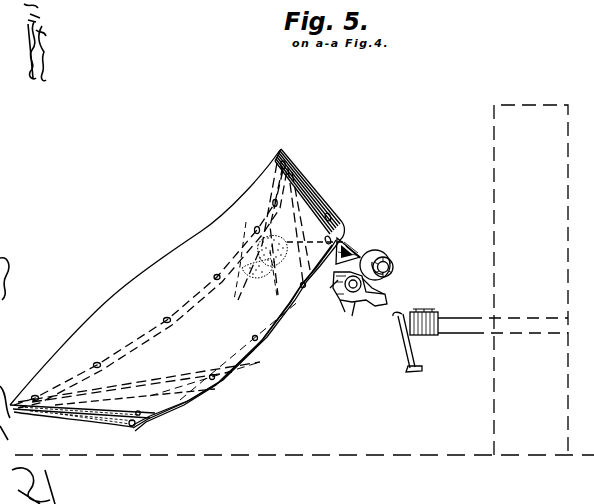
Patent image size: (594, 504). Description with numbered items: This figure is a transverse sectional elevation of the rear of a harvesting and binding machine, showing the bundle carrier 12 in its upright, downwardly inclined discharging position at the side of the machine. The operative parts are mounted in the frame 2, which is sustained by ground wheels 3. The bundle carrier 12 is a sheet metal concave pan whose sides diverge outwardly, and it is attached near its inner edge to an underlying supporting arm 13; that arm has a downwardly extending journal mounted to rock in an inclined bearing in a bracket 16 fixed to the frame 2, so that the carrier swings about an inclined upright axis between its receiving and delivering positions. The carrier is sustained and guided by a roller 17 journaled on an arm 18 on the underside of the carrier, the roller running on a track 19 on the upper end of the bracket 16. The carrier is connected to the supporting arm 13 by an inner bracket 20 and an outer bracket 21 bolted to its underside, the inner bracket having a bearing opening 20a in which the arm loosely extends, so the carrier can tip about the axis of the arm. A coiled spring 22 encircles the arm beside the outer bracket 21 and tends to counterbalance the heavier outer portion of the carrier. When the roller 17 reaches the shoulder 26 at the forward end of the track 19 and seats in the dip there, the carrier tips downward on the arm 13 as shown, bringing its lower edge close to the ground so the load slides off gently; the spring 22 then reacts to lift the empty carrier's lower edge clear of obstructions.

The frame 2 is at (304, 426).
The ground wheels 3 is at (494, 147).
The bundle carrier 12 is at (167, 260).
The supporting arm 13 is at (394, 268).
The bracket 16 is at (424, 362).
The roller 17 is at (333, 292).
The arm 18 is at (317, 291).
The track 19 is at (363, 292).
The inner bracket 20 is at (370, 253).
The bearing opening 20a is at (386, 261).
The outer bracket 21 is at (234, 272).
The coiled spring 22 is at (267, 283).
The shoulder 26 is at (347, 298).